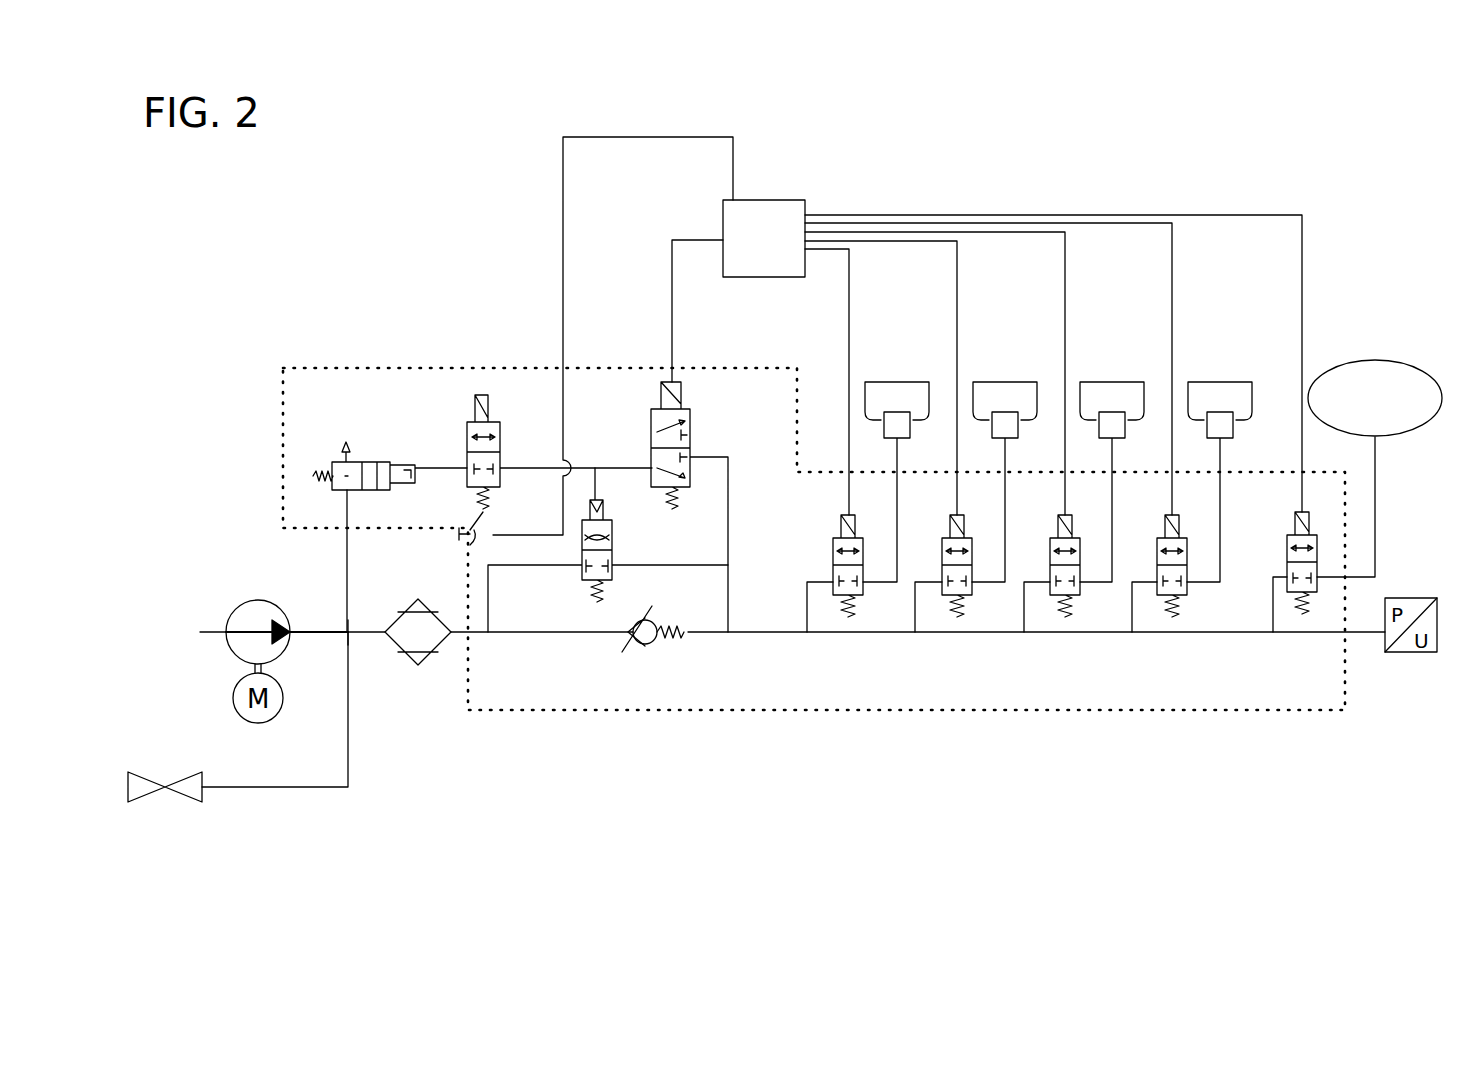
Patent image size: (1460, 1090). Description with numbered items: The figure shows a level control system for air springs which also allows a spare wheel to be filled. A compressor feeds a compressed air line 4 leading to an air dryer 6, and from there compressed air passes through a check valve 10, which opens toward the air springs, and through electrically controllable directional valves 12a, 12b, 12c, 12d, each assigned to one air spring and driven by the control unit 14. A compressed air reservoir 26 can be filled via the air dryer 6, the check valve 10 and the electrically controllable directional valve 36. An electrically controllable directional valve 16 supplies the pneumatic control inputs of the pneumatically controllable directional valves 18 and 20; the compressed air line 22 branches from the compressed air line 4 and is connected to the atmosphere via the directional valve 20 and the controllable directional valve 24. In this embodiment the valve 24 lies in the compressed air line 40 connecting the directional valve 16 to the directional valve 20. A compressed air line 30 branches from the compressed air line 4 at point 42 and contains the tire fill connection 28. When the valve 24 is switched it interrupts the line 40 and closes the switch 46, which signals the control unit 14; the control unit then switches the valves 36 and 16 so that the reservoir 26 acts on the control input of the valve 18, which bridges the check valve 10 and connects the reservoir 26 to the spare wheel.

The compressed air line 4 is at (330, 638).
The air dryer 6 is at (394, 650).
The check valve 10 is at (633, 648).
The electrically controllable directional valve 12a is at (856, 515).
The electrically controllable directional valve 12b is at (964, 515).
The electrically controllable directional valve 12c is at (1072, 515).
The electrically controllable directional valve 12d is at (1180, 515).
The control unit 14 is at (742, 210).
The electrically controllable directional valve 16 is at (692, 432).
The pneumatically controllable directional valve 18 is at (614, 560).
The pneumatically controllable directional valve 20 is at (368, 462).
The compressed air line 22 is at (347, 563).
The controllable directional valve 24 is at (468, 420).
The compressed air reservoir 26 is at (1370, 360).
The tire fill connection 28 is at (192, 790).
The compressed air line 30 is at (300, 790).
The electrically controllable directional valve 36 is at (1290, 598).
The compressed air line 40 is at (545, 465).
The branch point 42 is at (352, 640).
The switch 46 is at (470, 545).